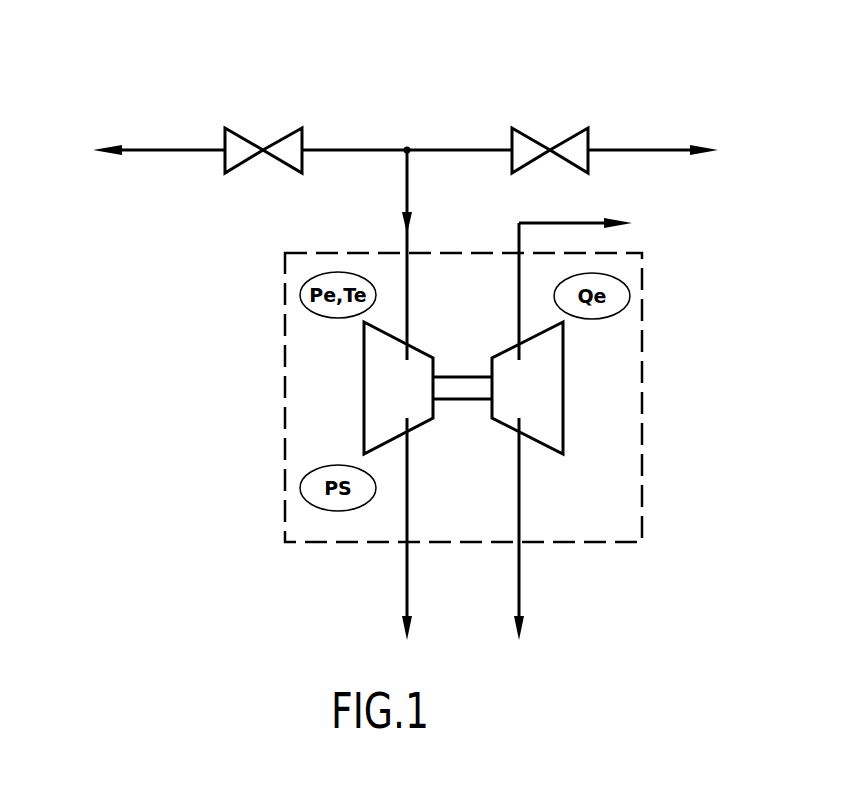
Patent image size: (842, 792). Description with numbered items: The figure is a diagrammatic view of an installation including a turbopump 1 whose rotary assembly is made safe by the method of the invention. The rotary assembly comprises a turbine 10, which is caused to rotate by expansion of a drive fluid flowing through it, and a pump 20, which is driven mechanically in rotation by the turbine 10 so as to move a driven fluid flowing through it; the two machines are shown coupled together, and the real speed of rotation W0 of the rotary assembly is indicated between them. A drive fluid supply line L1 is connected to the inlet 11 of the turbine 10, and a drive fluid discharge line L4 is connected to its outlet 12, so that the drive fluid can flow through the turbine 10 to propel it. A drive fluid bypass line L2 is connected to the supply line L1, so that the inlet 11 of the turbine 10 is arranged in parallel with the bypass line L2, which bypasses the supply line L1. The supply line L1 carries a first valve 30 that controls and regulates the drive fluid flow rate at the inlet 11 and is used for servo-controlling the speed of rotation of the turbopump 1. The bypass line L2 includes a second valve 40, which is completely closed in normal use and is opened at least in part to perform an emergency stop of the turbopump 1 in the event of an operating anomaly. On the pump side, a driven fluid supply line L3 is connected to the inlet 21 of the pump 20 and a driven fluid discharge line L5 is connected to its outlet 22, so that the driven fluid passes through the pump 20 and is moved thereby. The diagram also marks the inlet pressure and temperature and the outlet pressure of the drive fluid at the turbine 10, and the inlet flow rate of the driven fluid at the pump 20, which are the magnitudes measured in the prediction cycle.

The turbopump 1 is at (285, 364).
The turbine 10 is at (383, 397).
The inlet 11 is at (408, 333).
The outlet 12 is at (408, 437).
The pump 20 is at (515, 397).
The inlet 21 is at (518, 333).
The outlet 22 is at (518, 437).
The first valve 30 is at (271, 130).
The second valve 40 is at (547, 130).
The drive fluid supply line L1 is at (405, 63).
The drive fluid bypass line L2 is at (409, 63).
The driven fluid supply line L3 is at (575, 212).
The drive fluid discharge line L4 is at (420, 591).
The driven fluid discharge line L5 is at (532, 591).
The real speed of rotation W0 is at (455, 351).